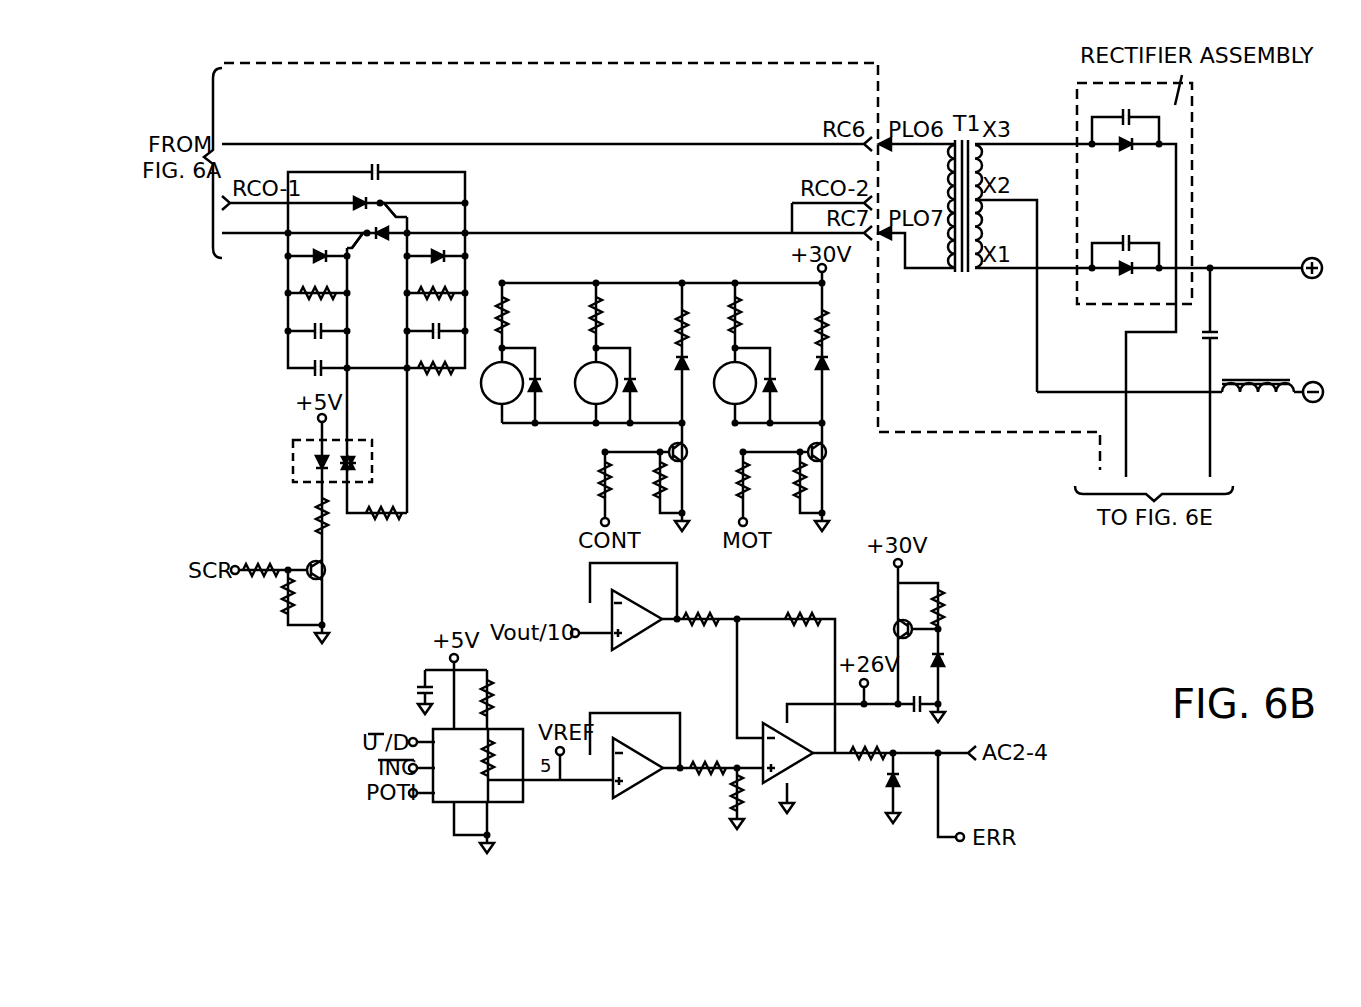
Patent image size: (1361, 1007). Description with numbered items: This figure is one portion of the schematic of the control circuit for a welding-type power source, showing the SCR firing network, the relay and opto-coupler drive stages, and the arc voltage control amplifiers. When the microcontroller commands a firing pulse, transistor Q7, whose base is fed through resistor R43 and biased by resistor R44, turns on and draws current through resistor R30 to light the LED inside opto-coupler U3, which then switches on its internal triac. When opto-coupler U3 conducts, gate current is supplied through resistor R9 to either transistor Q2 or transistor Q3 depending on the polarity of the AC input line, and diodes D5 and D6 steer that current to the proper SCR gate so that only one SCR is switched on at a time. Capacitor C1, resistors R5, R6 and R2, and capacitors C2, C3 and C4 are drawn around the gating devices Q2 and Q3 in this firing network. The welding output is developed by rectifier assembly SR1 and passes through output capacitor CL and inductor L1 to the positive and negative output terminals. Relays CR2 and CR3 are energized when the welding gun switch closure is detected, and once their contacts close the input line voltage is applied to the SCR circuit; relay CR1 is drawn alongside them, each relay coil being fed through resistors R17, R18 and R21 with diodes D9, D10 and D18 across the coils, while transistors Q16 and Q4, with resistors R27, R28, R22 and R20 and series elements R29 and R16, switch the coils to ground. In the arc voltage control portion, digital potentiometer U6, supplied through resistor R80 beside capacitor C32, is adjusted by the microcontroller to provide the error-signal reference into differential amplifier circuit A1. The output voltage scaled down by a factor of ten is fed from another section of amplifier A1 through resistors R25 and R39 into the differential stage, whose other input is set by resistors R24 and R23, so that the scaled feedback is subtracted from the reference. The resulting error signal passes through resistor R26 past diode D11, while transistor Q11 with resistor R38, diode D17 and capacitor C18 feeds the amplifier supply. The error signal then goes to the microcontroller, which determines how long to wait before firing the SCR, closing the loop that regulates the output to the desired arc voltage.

The capacitor C1 is at (361, 162).
The transistor Q2 is at (361, 196).
The transistor Q3 is at (375, 248).
The diode D6 is at (319, 269).
The diode D5 is at (439, 269).
The resistor R6 is at (318, 306).
The resistor R5 is at (436, 306).
The capacitor C3 is at (305, 343).
The capacitor C2 is at (424, 343).
The capacitor C4 is at (305, 380).
The resistor R2 is at (436, 381).
The opto-coupler U3 is at (317, 461).
The resistor R9 is at (384, 499).
The resistor R30 is at (300, 516).
The resistor R43 is at (261, 557).
The resistor R44 is at (267, 596).
The transistor Q7 is at (333, 570).
The resistor R17 is at (524, 315).
The resistor R18 is at (618, 315).
The resistor R29 is at (704, 339).
The resistor R21 is at (758, 315).
The resistor R16 is at (844, 339).
The relay CR2 is at (502, 383).
The relay CR3 is at (596, 383).
The relay coil CR1 is at (735, 383).
The diode D9 is at (552, 384).
The diode D10 is at (654, 384).
The diode D18 is at (794, 384).
The transistor Q16 is at (703, 453).
The transistor Q4 is at (836, 453).
The resistor R27 is at (583, 480).
The resistor R28 is at (640, 480).
The resistor R22 is at (721, 480).
The resistor R20 is at (779, 480).
The rectifier assembly SR1 is at (1134, 193).
The capacitor CL is at (1226, 335).
The inductor L1 is at (1258, 372).
The capacitor C32 is at (407, 690).
The resistor R80 is at (510, 698).
The digital potentiometer U6 is at (465, 769).
The differential amplifier circuit A1 is at (705, 690).
The resistor R25 is at (705, 607).
The resistor R39 is at (807, 607).
The resistor R24 is at (709, 756).
The resistor R23 is at (716, 797).
The transistor Q11 is at (884, 629).
The resistor R38 is at (960, 608).
The diode D17 is at (962, 660).
The capacitor C18 is at (917, 718).
The resistor R26 is at (867, 741).
The diode D11 is at (917, 780).